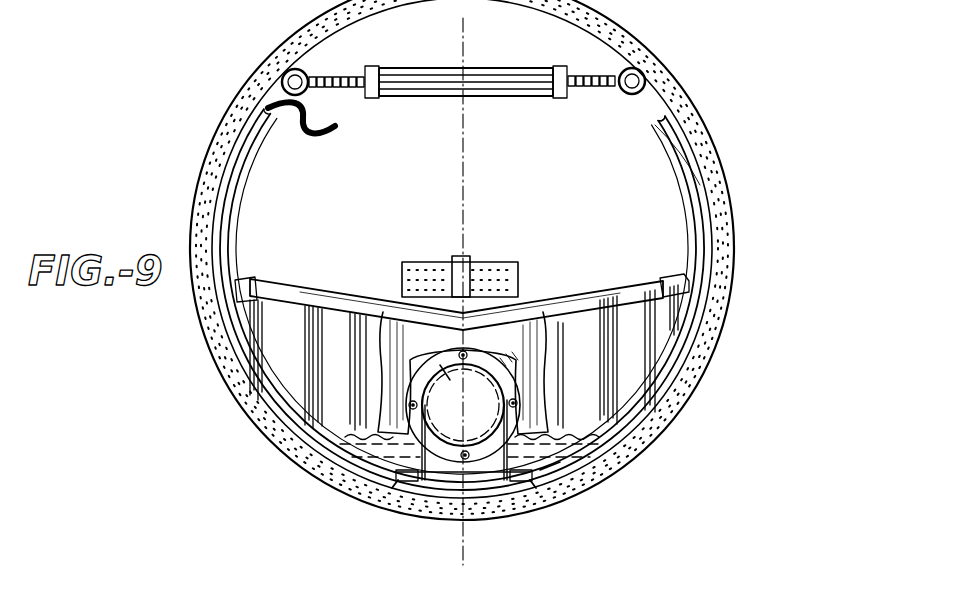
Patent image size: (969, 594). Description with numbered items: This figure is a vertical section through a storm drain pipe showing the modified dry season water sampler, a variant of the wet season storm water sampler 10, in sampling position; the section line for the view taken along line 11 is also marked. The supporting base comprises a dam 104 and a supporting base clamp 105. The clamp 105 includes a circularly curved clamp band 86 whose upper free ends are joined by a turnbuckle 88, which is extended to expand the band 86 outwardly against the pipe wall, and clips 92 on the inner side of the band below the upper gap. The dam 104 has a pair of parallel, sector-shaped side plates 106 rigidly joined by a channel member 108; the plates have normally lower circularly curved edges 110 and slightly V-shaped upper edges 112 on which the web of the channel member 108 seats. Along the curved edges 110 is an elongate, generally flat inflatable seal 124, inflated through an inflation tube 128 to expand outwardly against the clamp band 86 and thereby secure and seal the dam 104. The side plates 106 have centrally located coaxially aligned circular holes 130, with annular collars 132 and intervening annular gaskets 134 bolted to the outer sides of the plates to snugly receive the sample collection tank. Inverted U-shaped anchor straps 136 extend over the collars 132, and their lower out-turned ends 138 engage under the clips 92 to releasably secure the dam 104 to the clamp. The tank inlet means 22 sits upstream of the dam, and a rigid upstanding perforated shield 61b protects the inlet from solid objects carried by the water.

The storm water sampler 10 is at (444, 33).
The section line 11- 11 is at (660, 349).
The tank inlet means 22 is at (441, 276).
The perforated shield 61b is at (483, 263).
The clamp band 86 is at (656, 130).
The turnbuckle 88 is at (508, 106).
The clips 92 is at (388, 478).
The dam 104 is at (280, 360).
The supporting base clamp 105 is at (696, 183).
The side plates 106 is at (270, 338).
The channel member 108 is at (405, 287).
The circularly curved edges 110 is at (587, 456).
The upper edges 112 is at (257, 275).
The inflatable seal 124 is at (238, 180).
The inflation tube 128 is at (262, 101).
The circular holes 130 is at (430, 372).
The annular collars 132 is at (507, 410).
The annular gaskets 134 is at (500, 352).
The anchor straps 136 is at (578, 474).
The out-turned ends 138 is at (393, 488).